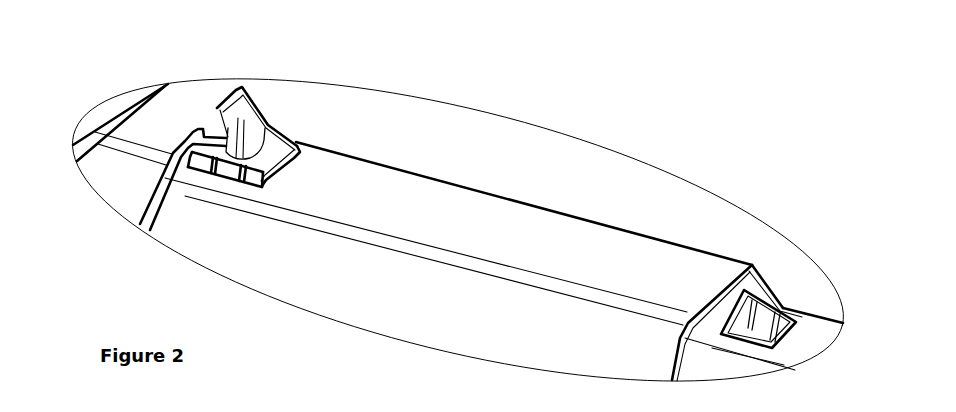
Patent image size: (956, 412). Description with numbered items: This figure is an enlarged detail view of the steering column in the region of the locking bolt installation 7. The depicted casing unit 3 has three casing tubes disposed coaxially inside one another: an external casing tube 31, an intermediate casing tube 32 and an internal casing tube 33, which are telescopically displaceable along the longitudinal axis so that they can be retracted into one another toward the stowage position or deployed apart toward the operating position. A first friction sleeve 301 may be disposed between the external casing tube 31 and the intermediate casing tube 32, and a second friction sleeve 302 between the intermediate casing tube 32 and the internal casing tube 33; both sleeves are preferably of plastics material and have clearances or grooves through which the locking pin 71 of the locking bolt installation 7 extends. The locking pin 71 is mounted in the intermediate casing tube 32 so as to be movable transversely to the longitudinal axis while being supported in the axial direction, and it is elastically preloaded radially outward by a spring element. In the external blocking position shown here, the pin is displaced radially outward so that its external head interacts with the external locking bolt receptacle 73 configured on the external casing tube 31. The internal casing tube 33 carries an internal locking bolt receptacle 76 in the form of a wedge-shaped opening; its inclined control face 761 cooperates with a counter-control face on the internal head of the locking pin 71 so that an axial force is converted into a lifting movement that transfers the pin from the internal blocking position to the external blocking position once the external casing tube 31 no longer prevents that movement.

The casing unit 3 is at (538, 155).
The external casing tube 31 is at (187, 107).
The intermediate casing tube 32 is at (633, 258).
The internal casing tube 33 is at (815, 330).
The first friction sleeve 301 is at (165, 152).
The second friction sleeve 302 is at (725, 297).
The locking bolt installation 7 is at (305, 106).
The locking pin 71 is at (268, 143).
The external locking bolt receptacle 73 is at (234, 122).
The internal locking bolt receptacle 76 is at (773, 249).
The inclined control face 761 is at (766, 335).